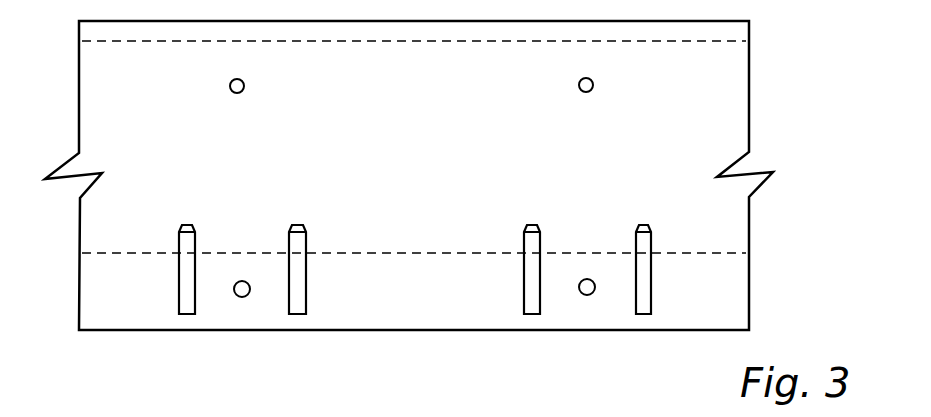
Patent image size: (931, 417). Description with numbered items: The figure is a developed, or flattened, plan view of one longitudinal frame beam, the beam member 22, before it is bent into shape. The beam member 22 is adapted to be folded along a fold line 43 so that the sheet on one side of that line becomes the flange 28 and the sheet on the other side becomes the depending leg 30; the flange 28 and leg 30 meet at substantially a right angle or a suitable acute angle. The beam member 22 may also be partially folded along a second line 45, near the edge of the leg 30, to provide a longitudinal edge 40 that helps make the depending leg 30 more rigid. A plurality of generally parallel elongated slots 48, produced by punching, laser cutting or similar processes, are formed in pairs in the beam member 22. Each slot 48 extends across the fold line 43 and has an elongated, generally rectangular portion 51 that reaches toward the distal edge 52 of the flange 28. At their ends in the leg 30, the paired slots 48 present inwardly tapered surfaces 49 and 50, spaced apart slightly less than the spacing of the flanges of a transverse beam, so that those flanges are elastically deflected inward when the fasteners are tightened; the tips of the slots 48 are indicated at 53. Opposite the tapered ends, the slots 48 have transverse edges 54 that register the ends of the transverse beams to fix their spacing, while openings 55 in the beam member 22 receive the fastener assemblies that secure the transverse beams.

The beam member 22 is at (343, 21).
The top edge 40 is at (445, 21).
The line 45 is at (407, 42).
The depending leg 30 is at (738, 68).
The fold line 43 is at (380, 251).
The flange 28 is at (745, 275).
The elongated slots 48 is at (196, 272).
The inwardly tapered surface 49 is at (196, 232).
The inwardly tapered surface 50 is at (290, 235).
The rectangular portion 51 is at (188, 270).
The distal edge 52 is at (310, 330).
The tab tip 53 is at (188, 225).
The transverse edge 54 is at (180, 309).
The openings 55 is at (243, 297).